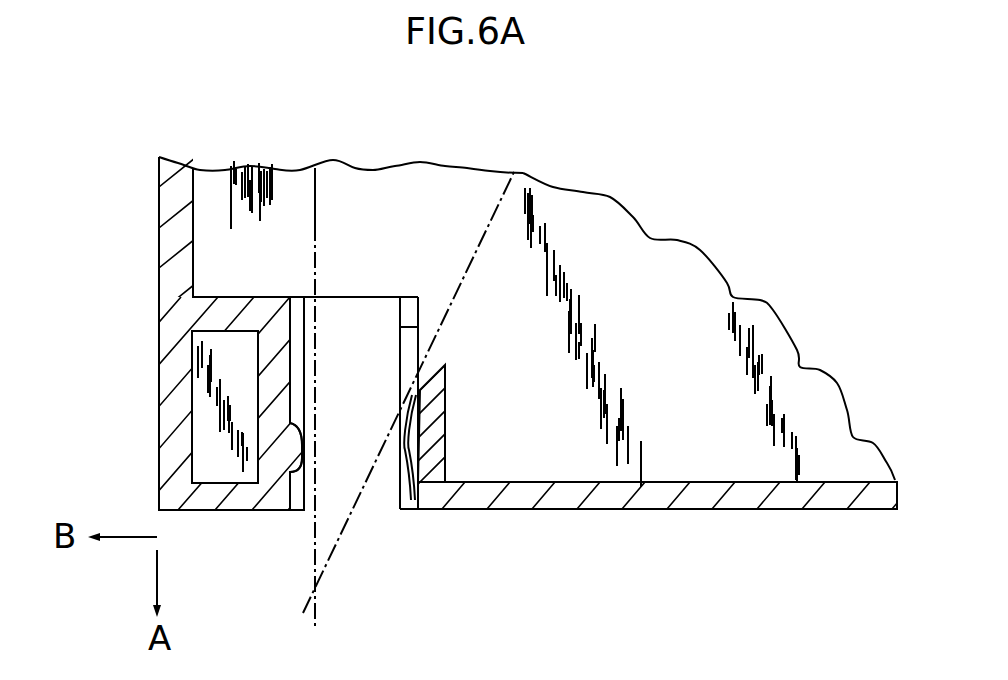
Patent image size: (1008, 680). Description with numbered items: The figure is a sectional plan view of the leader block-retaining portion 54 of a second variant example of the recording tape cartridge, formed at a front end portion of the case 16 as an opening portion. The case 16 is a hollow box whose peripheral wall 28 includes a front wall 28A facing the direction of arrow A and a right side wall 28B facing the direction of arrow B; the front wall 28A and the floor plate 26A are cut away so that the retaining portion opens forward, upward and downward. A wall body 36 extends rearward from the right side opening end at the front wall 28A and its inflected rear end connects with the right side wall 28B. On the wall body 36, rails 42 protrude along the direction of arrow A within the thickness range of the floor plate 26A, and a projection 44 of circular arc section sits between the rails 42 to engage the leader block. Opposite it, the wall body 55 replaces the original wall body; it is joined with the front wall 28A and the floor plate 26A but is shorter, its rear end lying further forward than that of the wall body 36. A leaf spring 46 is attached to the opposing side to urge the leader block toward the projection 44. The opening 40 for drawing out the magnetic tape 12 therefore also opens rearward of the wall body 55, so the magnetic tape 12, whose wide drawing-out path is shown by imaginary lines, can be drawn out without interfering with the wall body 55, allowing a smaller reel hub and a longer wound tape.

The magnetic tape 12 is at (480, 240).
The floor plate 26A is at (582, 210).
The peripheral wall 28 is at (335, 352).
The front wall 28A is at (687, 505).
The right side wall 28B is at (167, 278).
The wall body 36 is at (260, 357).
The opening 40 is at (400, 327).
The rail 42 is at (407, 507).
The projection 44 is at (297, 450).
The leaf spring 46 is at (412, 448).
The leader block-retaining portion 54 is at (373, 494).
The wall body 55 is at (438, 418).
The case 16 is at (801, 516).